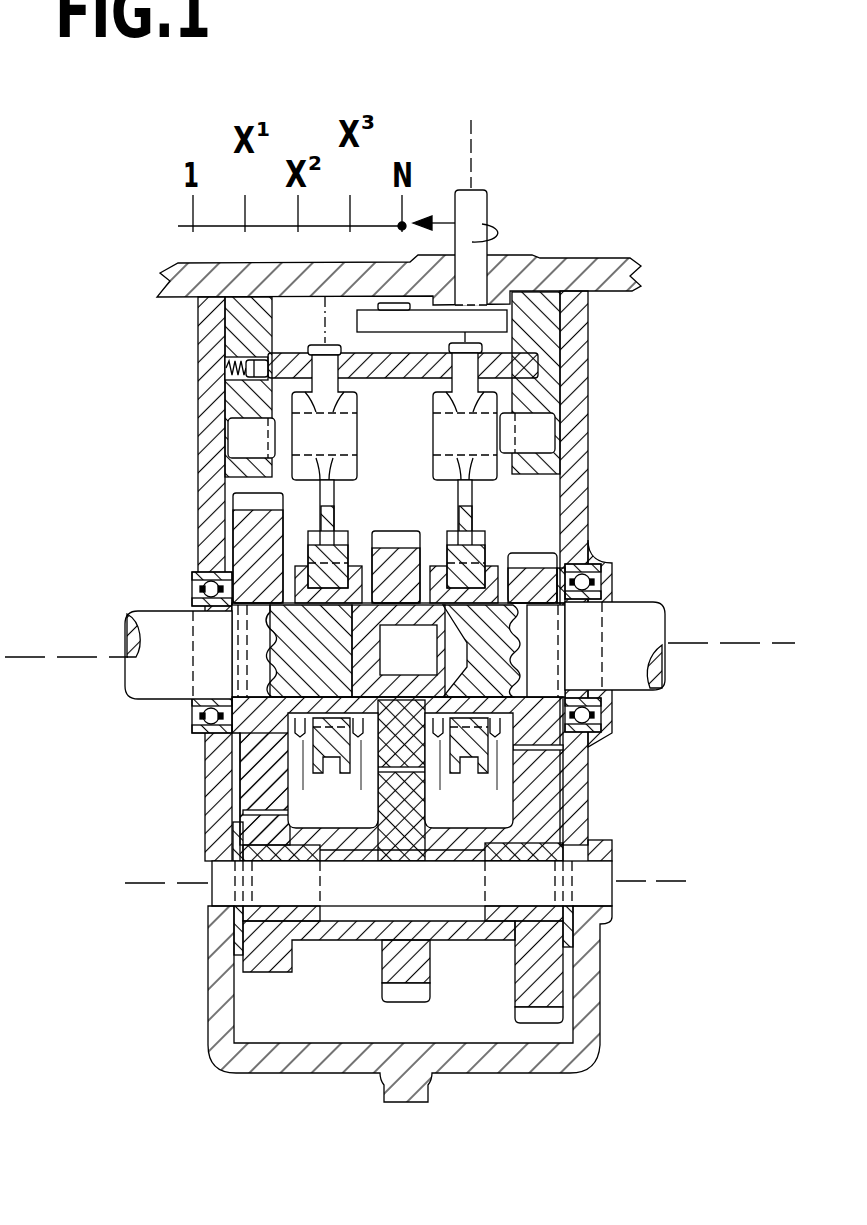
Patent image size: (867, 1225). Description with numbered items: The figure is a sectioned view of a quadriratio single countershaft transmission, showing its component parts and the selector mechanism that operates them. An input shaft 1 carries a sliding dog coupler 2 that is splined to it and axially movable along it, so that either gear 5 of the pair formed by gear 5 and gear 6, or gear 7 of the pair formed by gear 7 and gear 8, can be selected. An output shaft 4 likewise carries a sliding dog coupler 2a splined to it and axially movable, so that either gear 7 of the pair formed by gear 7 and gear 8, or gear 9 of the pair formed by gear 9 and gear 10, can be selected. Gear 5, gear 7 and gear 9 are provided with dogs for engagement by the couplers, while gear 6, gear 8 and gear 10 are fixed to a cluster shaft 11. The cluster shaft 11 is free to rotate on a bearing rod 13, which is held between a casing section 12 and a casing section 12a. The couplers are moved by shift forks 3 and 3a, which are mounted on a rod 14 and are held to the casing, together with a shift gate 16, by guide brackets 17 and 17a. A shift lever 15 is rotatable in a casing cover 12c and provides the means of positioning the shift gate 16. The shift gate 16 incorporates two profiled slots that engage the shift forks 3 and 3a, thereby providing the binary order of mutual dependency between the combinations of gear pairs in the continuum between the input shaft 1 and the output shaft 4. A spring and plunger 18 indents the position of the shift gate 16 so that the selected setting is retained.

The input shaft 1 is at (620, 625).
The sliding dog coupler 2 is at (477, 745).
The sliding dog coupler 2a is at (328, 748).
The shift fork 3 is at (466, 420).
The shift fork 3a is at (307, 430).
The output shaft 4 is at (167, 677).
The gear 5 is at (530, 560).
The gear 6 is at (540, 968).
The gear 7 is at (400, 540).
The gear 8 is at (400, 970).
The gear 9 is at (268, 795).
The gear 10 is at (268, 940).
The cluster shaft 11 is at (363, 928).
The casing section 12 is at (594, 747).
The casing section 12a is at (222, 942).
The casing cover 12c is at (232, 276).
The bearing rod 13 is at (582, 883).
The rod 14 is at (545, 435).
The shift lever 15 is at (473, 208).
The shift gate 16 is at (520, 370).
The guide bracket 17 is at (542, 342).
The guide bracket 17a is at (240, 346).
The spring and plunger 18 is at (236, 383).